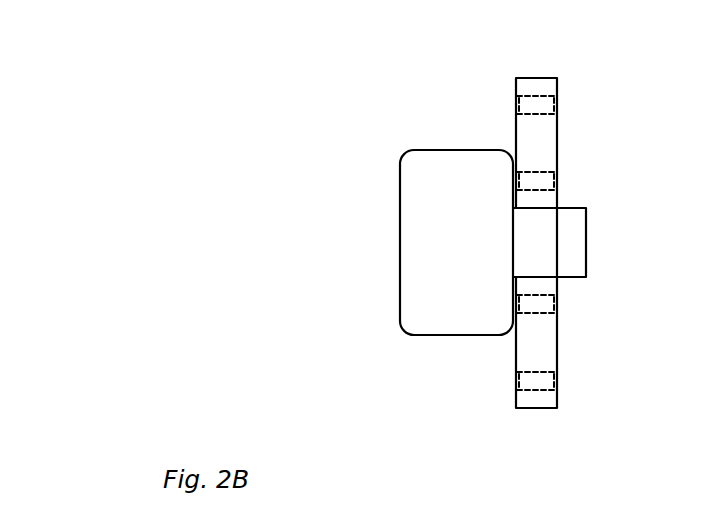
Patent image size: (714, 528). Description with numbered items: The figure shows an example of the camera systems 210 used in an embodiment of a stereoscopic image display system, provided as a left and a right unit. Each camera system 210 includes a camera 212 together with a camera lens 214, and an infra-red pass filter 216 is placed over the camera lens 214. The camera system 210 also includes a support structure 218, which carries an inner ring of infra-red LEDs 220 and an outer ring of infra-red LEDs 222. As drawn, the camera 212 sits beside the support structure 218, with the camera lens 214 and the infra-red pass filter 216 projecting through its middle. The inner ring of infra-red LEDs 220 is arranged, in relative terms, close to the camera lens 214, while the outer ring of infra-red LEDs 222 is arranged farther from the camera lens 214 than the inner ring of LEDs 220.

The camera system 210 is at (252, 194).
The camera 212 is at (438, 150).
The camera lens 214 is at (548, 262).
The infra-red pass filter 216 is at (587, 218).
The support structure 218 is at (530, 78).
The inner ring of infra-red LEDs 220 is at (545, 170).
The outer ring of infra-red LEDs 222 is at (543, 96).